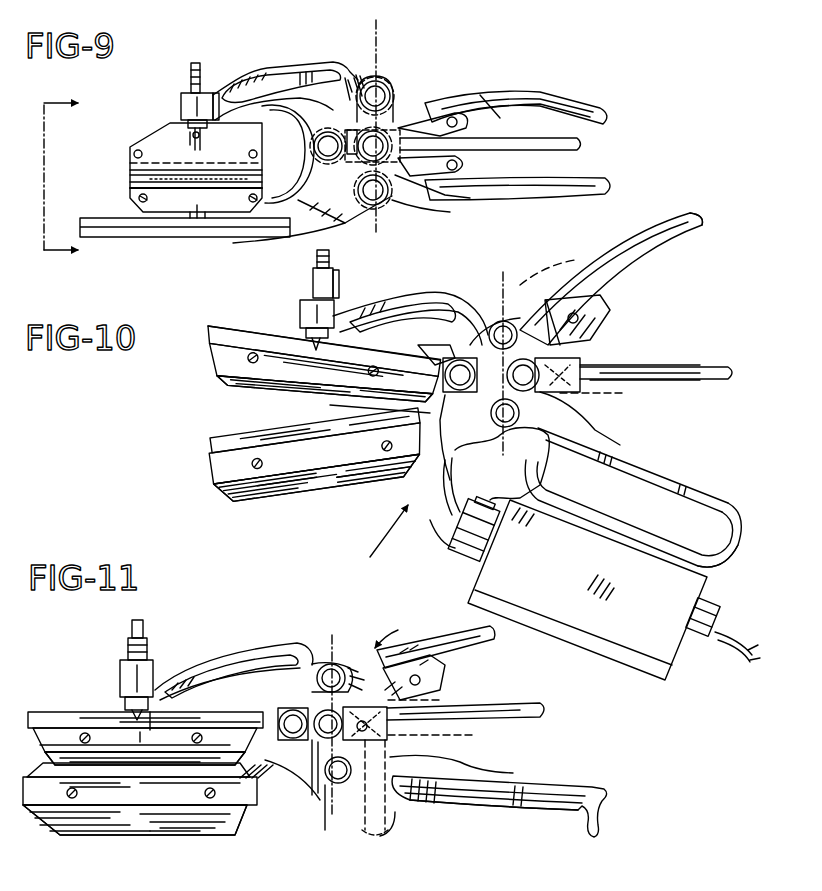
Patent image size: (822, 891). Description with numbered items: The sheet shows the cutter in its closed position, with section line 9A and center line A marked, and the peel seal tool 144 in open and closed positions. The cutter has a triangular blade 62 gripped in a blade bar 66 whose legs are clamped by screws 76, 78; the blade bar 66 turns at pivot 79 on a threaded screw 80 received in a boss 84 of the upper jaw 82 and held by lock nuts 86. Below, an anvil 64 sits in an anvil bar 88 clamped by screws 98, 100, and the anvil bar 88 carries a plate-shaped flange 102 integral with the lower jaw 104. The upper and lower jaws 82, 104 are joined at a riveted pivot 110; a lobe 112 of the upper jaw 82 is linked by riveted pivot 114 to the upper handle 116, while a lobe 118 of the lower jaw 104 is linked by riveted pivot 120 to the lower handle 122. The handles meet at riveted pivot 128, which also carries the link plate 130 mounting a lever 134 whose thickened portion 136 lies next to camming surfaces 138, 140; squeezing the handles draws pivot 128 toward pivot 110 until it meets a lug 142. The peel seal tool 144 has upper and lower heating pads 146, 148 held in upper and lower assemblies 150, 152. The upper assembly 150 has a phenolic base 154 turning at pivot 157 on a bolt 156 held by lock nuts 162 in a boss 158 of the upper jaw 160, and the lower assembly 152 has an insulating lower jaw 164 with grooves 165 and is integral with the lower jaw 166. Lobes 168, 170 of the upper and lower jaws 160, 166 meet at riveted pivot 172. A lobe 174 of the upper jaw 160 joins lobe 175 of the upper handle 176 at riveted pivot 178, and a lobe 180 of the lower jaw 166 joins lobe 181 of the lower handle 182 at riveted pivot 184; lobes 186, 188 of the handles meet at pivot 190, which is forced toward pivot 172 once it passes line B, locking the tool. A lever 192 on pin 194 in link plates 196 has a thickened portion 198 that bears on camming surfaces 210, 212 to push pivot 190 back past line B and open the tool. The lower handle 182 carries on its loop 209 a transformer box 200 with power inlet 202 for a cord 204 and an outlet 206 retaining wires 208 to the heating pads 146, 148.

In FIG. 9, the section line 9A is at (44, 180).
In FIG. 9, the threaded screw 80 is at (196, 62).
In FIG. 9, the boss 84 is at (217, 92).
In FIG. 9, the lock nuts 86 is at (182, 100).
In FIG. 9, the blade 62 is at (135, 150).
In FIG. 9, the screw 76 is at (138, 149).
In FIG. 9, the screw 78 is at (254, 149).
In FIG. 9, the pivot 79 is at (193, 137).
In FIG. 9, the blade bar 66 is at (232, 152).
In FIG. 9, the anvil 64 is at (131, 178).
In FIG. 9, the screw 98 is at (140, 207).
In FIG. 9, the flange 102 is at (132, 238).
In FIG. 9, the anvil bar 88 is at (205, 238).
In FIG. 9, the upper jaw 82 is at (300, 62).
In FIG. 9, the lug 142 is at (352, 70).
In FIG. 9, the axis A is at (383, 116).
In FIG. 9, the riveted pivot 128 is at (392, 88).
In FIG. 9, the lobe 112 is at (386, 85).
In FIG. 9, the riveted pivot 114 is at (390, 80).
In FIG. 9, the riveted pivot 110 is at (314, 146).
In FIG. 9, the screw 100 is at (270, 200).
In FIG. 9, the lobe 118 is at (392, 200).
In FIG. 9, the lower jaw 104 is at (340, 224).
In FIG. 9, the upper handle 116 is at (517, 92).
In FIG. 9, the camming surface 138 is at (490, 95).
In FIG. 9, the thickened portion 136 is at (465, 125).
In FIG. 9, the lever 134 is at (582, 144).
In FIG. 9, the camming surface 140 is at (480, 168).
In FIG. 9, the lower handle 122 is at (590, 182).
In FIG. 9, the riveted pivot 120 is at (460, 205).
In FIG. 9, the link plate 130 is at (430, 205).
In FIG. 10, the bolt 156 is at (331, 280).
In FIG. 10, the lock nuts 162 is at (302, 305).
In FIG. 10, the boss 158 is at (340, 285).
In FIG. 10, the upper assembly 150 is at (210, 345).
In FIG. 10, the base 154 is at (220, 328).
In FIG. 11, the base 154 is at (58, 712).
In FIG. 10, the upper heating pad 146 is at (235, 382).
In FIG. 11, the upper heating pad 146 is at (72, 755).
In FIG. 10, the pivot 157 is at (285, 372).
In FIG. 11, the pivot 157 is at (150, 715).
In FIG. 10, the lower jaw 166 is at (400, 415).
In FIG. 11, the lower jaw 166 is at (312, 812).
In FIG. 10, the lower heating pad 148 is at (222, 442).
In FIG. 11, the lower heating pad 148 is at (98, 772).
In FIG. 10, the lower assembly 152 is at (213, 482).
In FIG. 10, the grooves 165 is at (278, 496).
In FIG. 11, the grooves 165 is at (170, 835).
In FIG. 10, the lower jaw 164 is at (338, 490).
In FIG. 11, the lower jaw 164 is at (140, 822).
In FIG. 10, the upper jaw 160 is at (432, 300).
In FIG. 11, the upper jaw 160 is at (235, 650).
In FIG. 10, the lobe 170 is at (425, 348).
In FIG. 10, the riveted pivot 172 is at (448, 388).
In FIG. 11, the riveted pivot 172 is at (295, 708).
In FIG. 10, the lobe 168 is at (478, 320).
In FIG. 10, the line B is at (492, 280).
In FIG. 11, the line B is at (338, 655).
In FIG. 10, the riveted pivot 178 is at (575, 332).
In FIG. 11, the riveted pivot 178 is at (322, 665).
In FIG. 10, the lobe 175 is at (528, 278).
In FIG. 10, the lobe 174 is at (590, 298).
In FIG. 10, the upper handle 176 is at (688, 228).
In FIG. 10, the camming surface 210 is at (600, 312).
In FIG. 11, the camming surface 210 is at (445, 672).
In FIG. 10, the pivot 190 is at (578, 350).
In FIG. 11, the pivot 190 is at (335, 785).
In FIG. 10, the lever 192 is at (718, 365).
In FIG. 11, the lever 192 is at (543, 703).
In FIG. 10, the pin 194 is at (628, 362).
In FIG. 11, the pin 194 is at (440, 765).
In FIG. 10, the thickened portion 198 is at (610, 393).
In FIG. 11, the thickened portion 198 is at (476, 736).
In FIG. 10, the link plates 196 is at (680, 380).
In FIG. 11, the link plates 196 is at (455, 808).
In FIG. 10, the riveted pivot 184 is at (600, 408).
In FIG. 11, the riveted pivot 184 is at (375, 836).
In FIG. 10, the camming surface 212 is at (610, 445).
In FIG. 11, the camming surface 212 is at (490, 785).
In FIG. 10, the lower handle 182 is at (665, 490).
In FIG. 10, the loop 209 is at (708, 540).
In FIG. 10, the lobe 180 is at (503, 462).
In FIG. 10, the lobe 181 is at (458, 452).
In FIG. 10, the peel seal tool 144 is at (368, 531).
In FIG. 11, the peel seal tool 144 is at (435, 635).
In FIG. 10, the wires 208 is at (435, 528).
In FIG. 10, the outlet 206 is at (468, 552).
In FIG. 10, the transformer box 200 is at (587, 590).
In FIG. 10, the power inlet 202 is at (716, 600).
In FIG. 10, the cord 204 is at (748, 665).
In FIG. 11, the lobe 188 is at (430, 698).
In FIG. 11, the lobe 186 is at (398, 825).